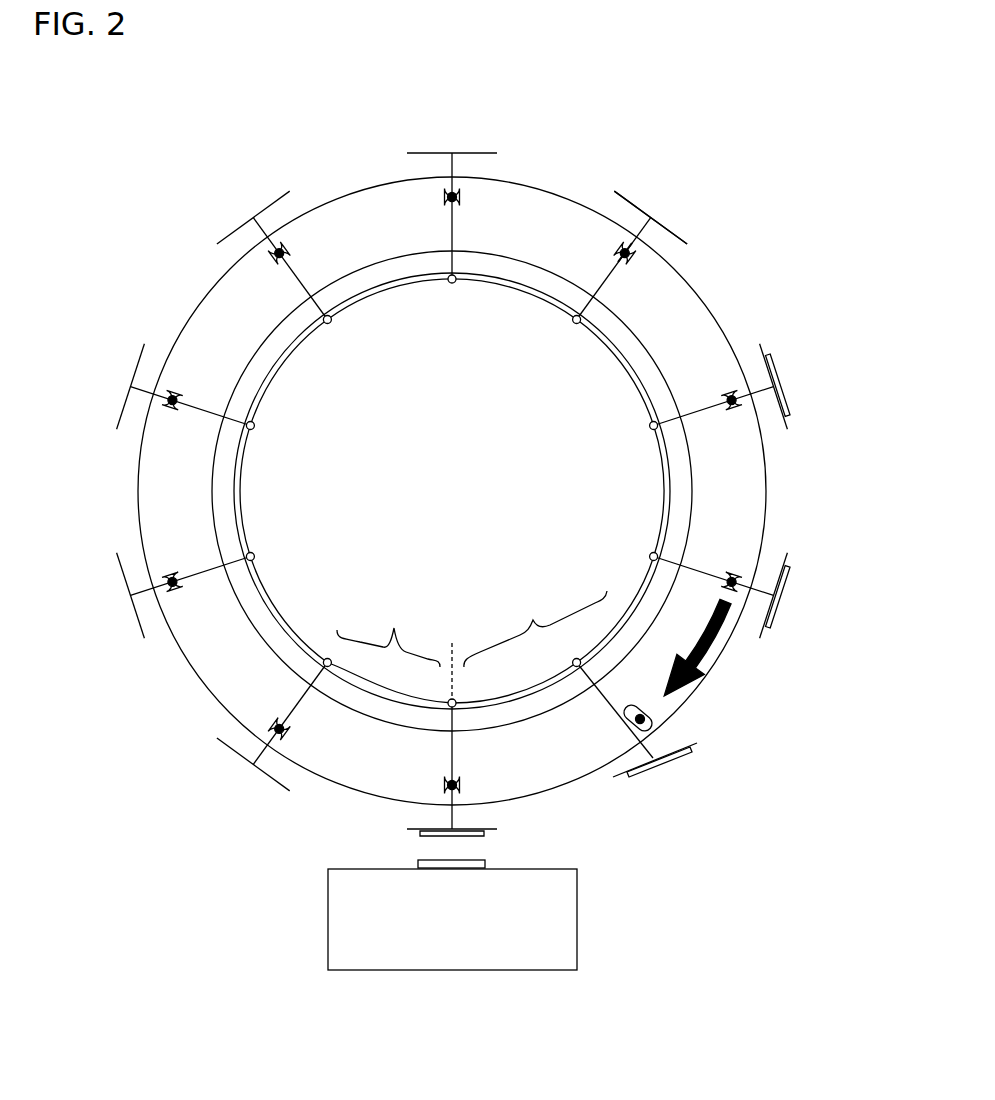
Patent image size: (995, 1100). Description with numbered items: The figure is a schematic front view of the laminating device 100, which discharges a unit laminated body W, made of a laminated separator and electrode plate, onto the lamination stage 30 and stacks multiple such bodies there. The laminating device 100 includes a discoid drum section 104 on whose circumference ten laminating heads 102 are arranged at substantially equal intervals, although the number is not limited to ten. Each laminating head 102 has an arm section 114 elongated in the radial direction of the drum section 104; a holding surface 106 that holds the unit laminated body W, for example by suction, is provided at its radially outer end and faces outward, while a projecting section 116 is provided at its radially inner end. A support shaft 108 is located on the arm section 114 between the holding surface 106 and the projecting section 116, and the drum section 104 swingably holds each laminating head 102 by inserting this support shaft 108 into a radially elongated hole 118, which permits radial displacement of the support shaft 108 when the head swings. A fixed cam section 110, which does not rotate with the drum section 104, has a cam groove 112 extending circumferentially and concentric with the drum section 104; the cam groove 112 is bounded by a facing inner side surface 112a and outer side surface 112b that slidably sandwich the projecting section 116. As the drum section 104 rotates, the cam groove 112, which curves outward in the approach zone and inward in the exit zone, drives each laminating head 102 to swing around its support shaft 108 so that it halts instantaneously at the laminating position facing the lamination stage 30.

The laminating device 100 is at (207, 150).
The laminating head 102 is at (692, 240).
The drum section 104 is at (703, 295).
The holding surface 106 is at (643, 208).
The support shaft 108 is at (619, 249).
The cam section 110 is at (660, 365).
The cam groove 112 is at (551, 491).
The inner side surface 112a is at (663, 497).
The outer side surface 112b is at (668, 518).
The arm section 114 is at (604, 281).
The projecting section 116 is at (577, 324).
The elongated hole 118 is at (623, 268).
The unit laminated body W is at (482, 836).
The lamination stage 30 is at (577, 930).